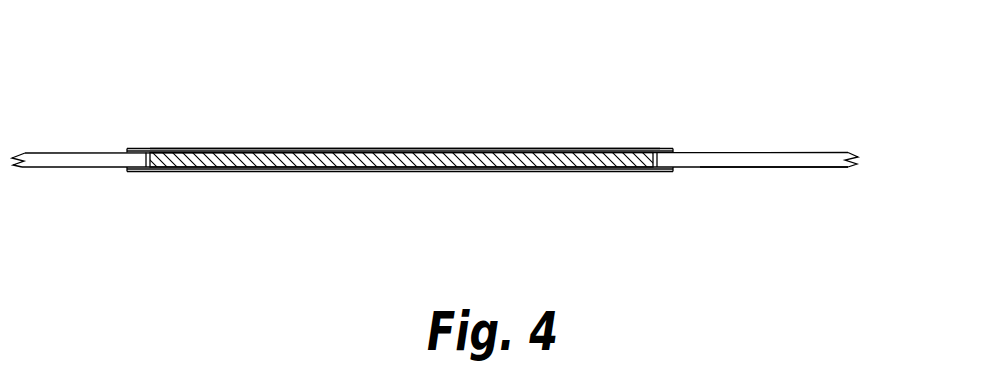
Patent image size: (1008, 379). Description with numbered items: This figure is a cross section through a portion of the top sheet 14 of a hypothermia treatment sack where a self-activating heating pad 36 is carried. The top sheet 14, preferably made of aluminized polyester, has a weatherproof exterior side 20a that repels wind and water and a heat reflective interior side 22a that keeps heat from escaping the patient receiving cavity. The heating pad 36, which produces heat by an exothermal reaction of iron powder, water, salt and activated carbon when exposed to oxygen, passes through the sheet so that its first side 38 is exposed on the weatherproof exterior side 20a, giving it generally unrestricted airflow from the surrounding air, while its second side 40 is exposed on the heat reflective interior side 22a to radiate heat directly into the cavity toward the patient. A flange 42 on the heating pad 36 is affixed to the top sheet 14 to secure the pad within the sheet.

The top sheet 14 is at (762, 99).
The weatherproof exterior side 20a is at (797, 152).
The heat reflective interior side 22a is at (792, 168).
The self-activating heating pad 36 is at (328, 172).
The first side 38 is at (180, 146).
The second side 40 is at (610, 172).
The flange 42 is at (136, 147).